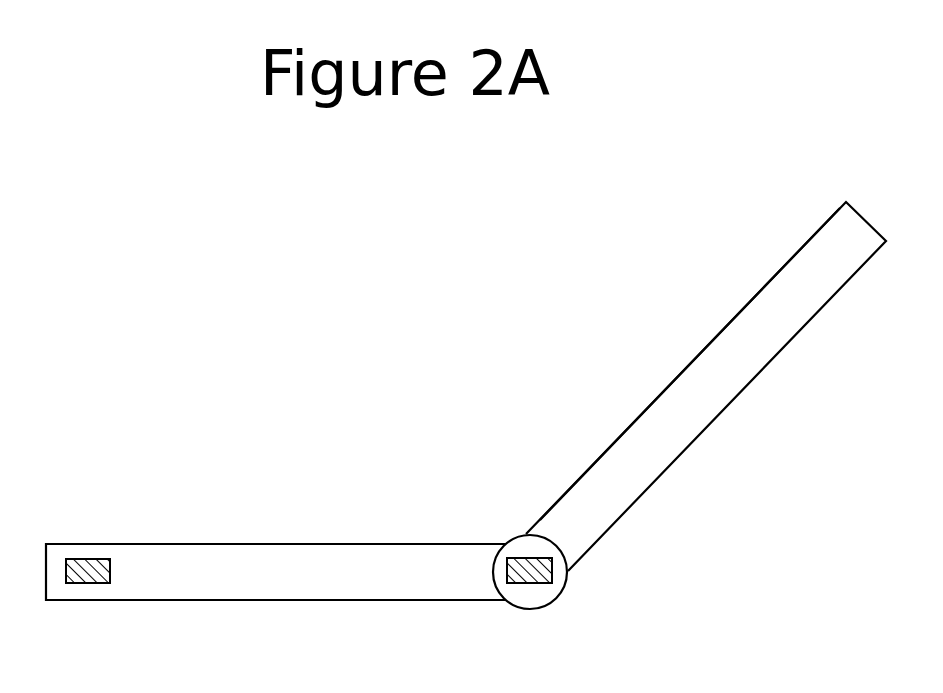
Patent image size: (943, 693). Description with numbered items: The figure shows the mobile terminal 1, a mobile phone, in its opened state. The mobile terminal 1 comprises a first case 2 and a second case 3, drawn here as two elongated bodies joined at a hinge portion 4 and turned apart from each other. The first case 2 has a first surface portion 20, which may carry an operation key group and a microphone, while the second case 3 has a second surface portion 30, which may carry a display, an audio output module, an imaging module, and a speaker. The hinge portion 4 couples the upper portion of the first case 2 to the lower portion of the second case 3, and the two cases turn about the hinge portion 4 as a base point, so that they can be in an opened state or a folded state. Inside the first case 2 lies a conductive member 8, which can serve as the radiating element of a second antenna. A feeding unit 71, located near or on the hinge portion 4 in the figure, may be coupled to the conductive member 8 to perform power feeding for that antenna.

The mobile terminal 1 is at (349, 317).
The first case 2 is at (290, 592).
The first surface portion 20 is at (297, 543).
The conductive member 8 is at (73, 585).
The hinge portion 4 is at (537, 597).
The feeding unit 71 is at (522, 578).
The second case 3 is at (727, 397).
The second surface portion 30 is at (677, 378).